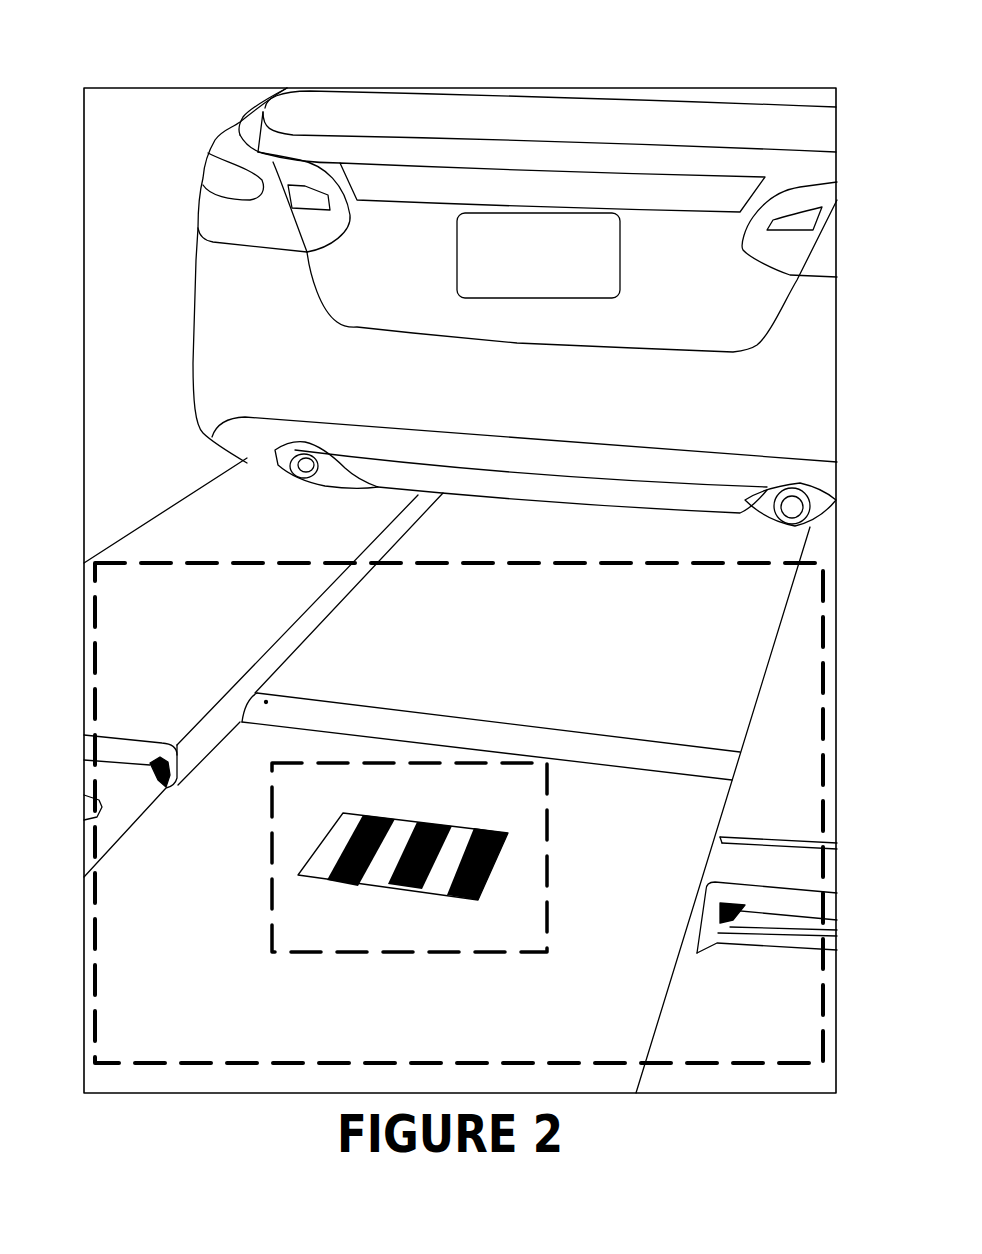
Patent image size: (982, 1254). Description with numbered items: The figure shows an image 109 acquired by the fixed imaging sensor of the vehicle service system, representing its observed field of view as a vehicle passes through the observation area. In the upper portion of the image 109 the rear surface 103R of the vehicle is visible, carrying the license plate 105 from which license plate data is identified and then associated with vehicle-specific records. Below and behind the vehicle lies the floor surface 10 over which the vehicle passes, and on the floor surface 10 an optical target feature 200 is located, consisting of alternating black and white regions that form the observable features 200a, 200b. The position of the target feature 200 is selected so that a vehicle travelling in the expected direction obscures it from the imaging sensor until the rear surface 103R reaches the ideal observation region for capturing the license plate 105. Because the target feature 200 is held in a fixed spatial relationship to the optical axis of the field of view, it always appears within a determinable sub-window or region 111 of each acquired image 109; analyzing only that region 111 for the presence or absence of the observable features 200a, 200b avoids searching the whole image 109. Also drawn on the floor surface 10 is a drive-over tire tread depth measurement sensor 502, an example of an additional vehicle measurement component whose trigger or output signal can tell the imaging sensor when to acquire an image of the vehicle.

The rear surface of the vehicle 103R is at (515, 274).
The license plate 105 is at (579, 155).
The image 109 is at (422, 775).
The floor surface 10 is at (542, 612).
The sub-window or region 111 is at (491, 714).
The target feature 200 is at (412, 889).
The observable feature 200a is at (281, 850).
The observable feature 200b is at (552, 851).
The drive-over tire tread depth measurement sensor 502 is at (672, 930).